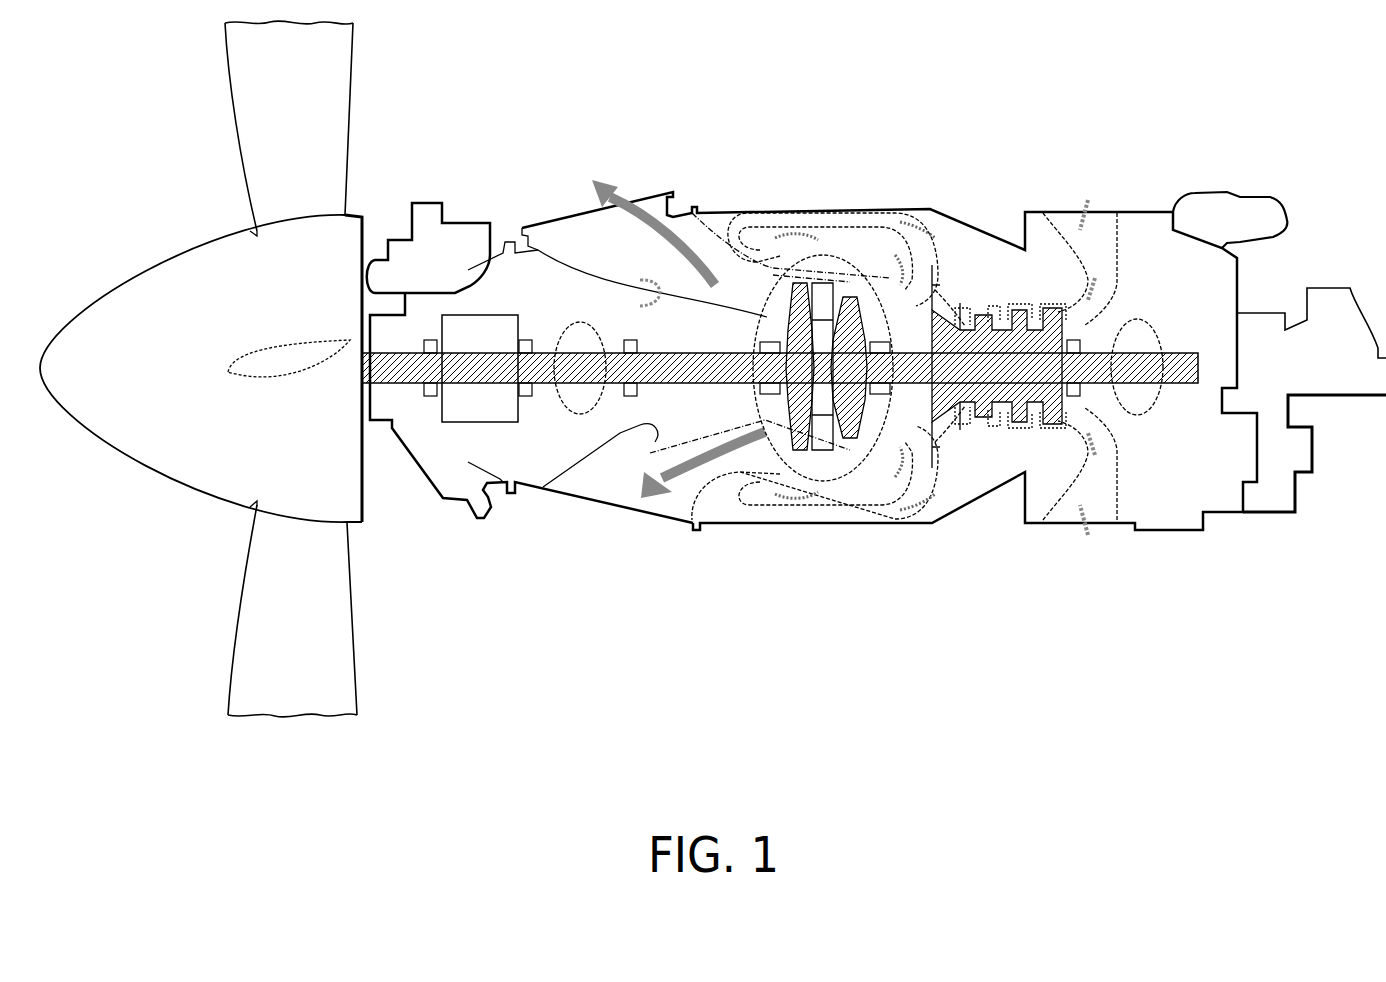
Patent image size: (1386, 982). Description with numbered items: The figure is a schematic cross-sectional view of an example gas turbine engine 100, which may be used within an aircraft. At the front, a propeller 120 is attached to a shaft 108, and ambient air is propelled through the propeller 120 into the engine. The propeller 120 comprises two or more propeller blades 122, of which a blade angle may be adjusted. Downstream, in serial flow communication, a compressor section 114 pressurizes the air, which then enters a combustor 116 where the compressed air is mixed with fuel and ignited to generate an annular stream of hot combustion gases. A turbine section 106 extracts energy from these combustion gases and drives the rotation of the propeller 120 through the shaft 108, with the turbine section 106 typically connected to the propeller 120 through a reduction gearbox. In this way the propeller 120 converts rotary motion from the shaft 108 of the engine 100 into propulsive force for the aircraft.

The gas turbine engine 100 is at (706, 42).
The turbine section 106 is at (752, 393).
The shaft 108 is at (391, 383).
The compressor section 114 is at (980, 432).
The combustor 116 is at (823, 262).
The propeller 120 is at (152, 236).
The propeller blades 122 is at (332, 78).